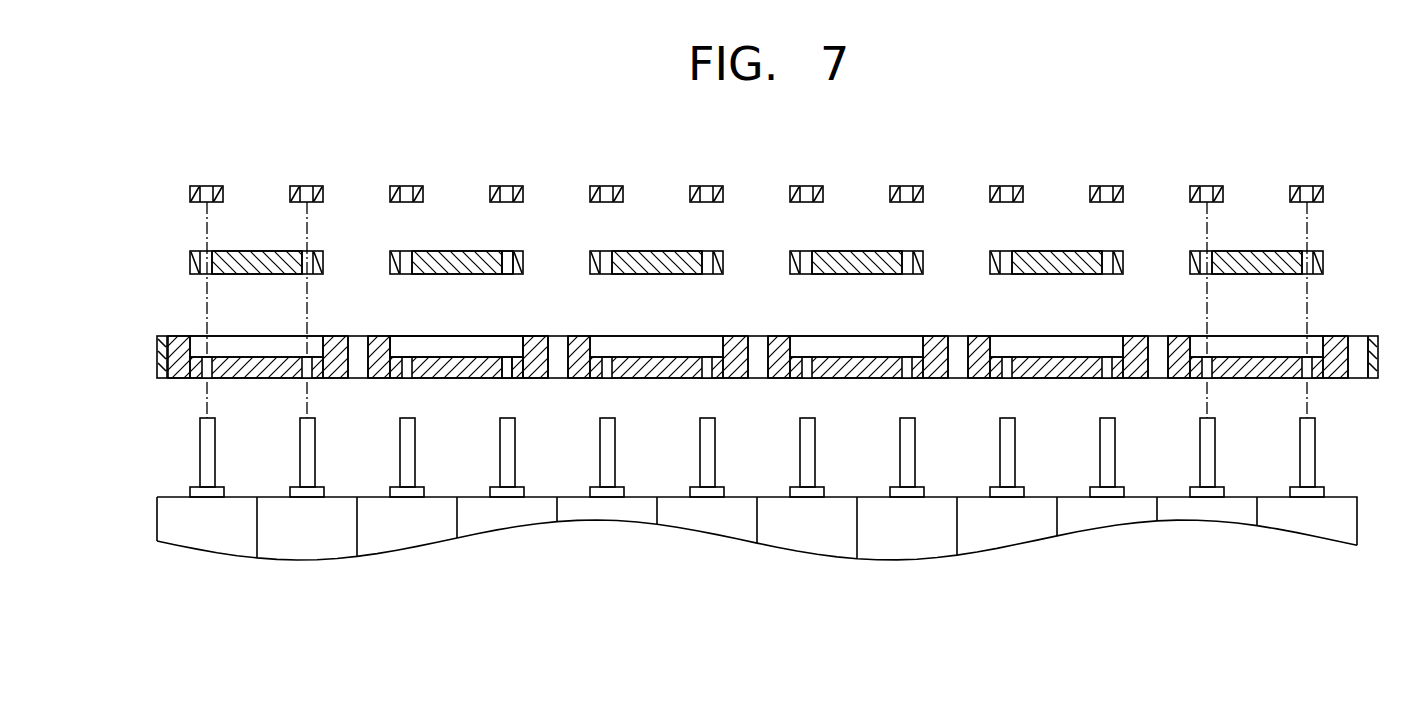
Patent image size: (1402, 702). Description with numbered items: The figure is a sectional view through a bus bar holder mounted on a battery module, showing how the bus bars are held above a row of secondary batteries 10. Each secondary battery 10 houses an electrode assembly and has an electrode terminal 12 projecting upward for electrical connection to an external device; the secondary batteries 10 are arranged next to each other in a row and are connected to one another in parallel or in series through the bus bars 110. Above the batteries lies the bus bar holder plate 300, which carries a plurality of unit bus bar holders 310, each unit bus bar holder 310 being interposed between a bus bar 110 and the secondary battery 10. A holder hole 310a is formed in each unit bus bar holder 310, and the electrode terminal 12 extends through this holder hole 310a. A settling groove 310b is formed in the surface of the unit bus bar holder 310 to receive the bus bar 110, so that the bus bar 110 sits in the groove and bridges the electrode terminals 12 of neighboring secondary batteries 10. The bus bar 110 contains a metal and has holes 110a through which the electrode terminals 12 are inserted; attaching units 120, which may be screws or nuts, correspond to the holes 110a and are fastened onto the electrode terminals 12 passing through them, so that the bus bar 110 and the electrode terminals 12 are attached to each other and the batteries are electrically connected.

The secondary battery 10 is at (323, 540).
The electrode terminal 12 is at (302, 497).
The bus bar 110 is at (461, 255).
The hole 110a is at (507, 257).
The attaching unit 120 is at (522, 186).
The bus bar holder plate 300 is at (160, 380).
The unit bus bar holder 310 is at (533, 345).
The holder hole 310a is at (508, 370).
The settling groove 310b is at (398, 342).